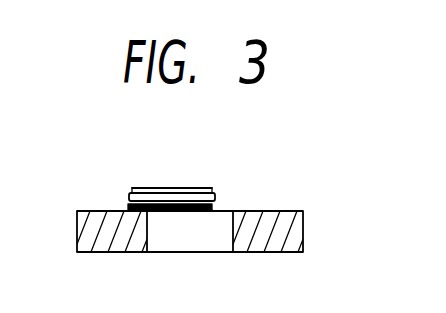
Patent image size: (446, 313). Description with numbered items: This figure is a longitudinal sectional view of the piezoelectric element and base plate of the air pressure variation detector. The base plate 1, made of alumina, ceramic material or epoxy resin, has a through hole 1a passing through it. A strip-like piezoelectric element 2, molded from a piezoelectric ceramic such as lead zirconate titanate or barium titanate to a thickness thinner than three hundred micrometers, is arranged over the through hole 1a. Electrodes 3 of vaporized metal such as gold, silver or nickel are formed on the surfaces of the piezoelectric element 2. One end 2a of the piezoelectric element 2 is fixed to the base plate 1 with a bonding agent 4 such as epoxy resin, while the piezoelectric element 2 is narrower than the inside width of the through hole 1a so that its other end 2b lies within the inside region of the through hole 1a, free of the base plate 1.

The base plate 1 is at (204, 231).
The through hole 1a is at (192, 262).
The piezoelectric element 2 is at (199, 185).
The one end of the piezoelectric element 2a is at (133, 164).
The other end of the piezoelectric element 2b is at (225, 164).
The electrodes 3 is at (171, 213).
The bonding agent 4 is at (141, 189).